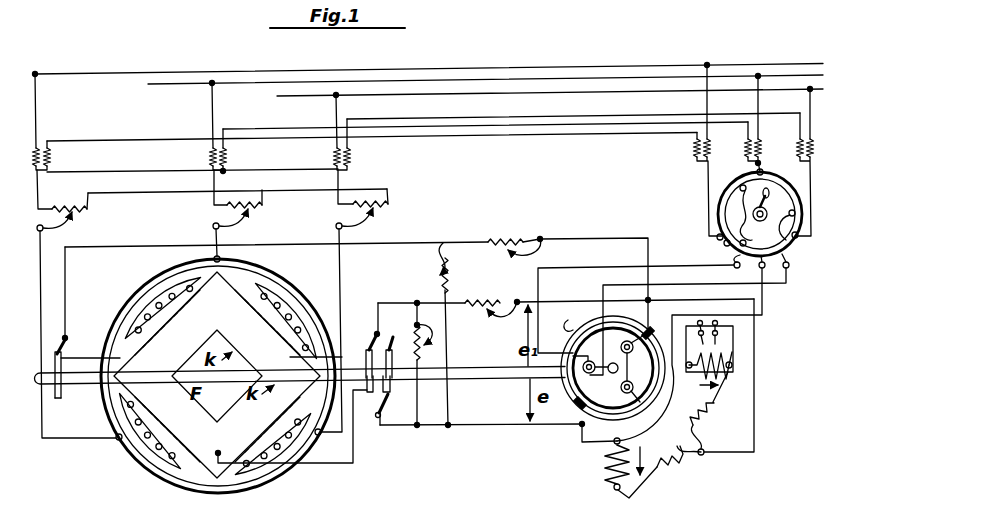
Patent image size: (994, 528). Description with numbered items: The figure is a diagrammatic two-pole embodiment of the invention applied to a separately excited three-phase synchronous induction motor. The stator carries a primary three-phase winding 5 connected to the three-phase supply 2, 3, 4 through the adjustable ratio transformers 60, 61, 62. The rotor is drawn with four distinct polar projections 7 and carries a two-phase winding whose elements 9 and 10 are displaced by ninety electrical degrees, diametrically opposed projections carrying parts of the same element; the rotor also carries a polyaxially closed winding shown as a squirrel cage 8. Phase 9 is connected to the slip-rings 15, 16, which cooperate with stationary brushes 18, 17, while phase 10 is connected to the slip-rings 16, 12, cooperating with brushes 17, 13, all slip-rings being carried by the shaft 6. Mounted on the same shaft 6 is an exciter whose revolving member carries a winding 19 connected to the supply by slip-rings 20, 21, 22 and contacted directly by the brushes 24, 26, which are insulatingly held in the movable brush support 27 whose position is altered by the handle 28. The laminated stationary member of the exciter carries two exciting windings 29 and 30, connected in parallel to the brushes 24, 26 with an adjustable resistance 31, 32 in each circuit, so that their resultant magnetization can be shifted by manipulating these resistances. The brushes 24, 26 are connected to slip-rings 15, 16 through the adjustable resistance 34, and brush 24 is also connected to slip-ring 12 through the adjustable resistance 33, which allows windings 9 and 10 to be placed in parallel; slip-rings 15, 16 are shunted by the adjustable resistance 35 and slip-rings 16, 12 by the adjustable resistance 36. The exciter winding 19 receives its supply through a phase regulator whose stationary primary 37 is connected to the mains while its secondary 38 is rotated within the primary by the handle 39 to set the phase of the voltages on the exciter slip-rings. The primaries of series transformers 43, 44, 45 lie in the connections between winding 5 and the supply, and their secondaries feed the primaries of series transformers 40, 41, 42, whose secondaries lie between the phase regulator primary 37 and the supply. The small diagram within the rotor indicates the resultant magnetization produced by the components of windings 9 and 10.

The three-phase supply 2 is at (126, 78).
The three-phase supply 3 is at (174, 85).
The three-phase supply 4 is at (285, 97).
The primary three-phase winding 5 is at (134, 293).
The shaft 6 is at (468, 379).
The polar projections 7 is at (181, 275).
The squirrel cage 8 is at (293, 296).
The rotor winding element 9 is at (238, 307).
The rotor winding element 10 is at (246, 434).
The slip-ring 12 is at (62, 400).
The stationary brush 13 is at (66, 341).
The slip-ring 15 is at (371, 397).
The slip-ring 16 is at (391, 345).
The stationary brush 17 is at (387, 406).
The stationary brush 18 is at (371, 336).
The exciter winding 19 is at (578, 384).
The slip-ring 20 is at (622, 340).
The slip-ring 21 is at (590, 374).
The slip-ring 22 is at (637, 377).
The brush 24 is at (653, 333).
The brush 26 is at (579, 408).
The movable brush support 27 is at (602, 427).
The handle 28 is at (570, 318).
The exciting winding 29 is at (612, 471).
The exciting winding 30 is at (732, 372).
The adjustable resistance 31 is at (672, 455).
The adjustable resistance 32 is at (722, 377).
The adjustable resistance 33 is at (569, 274).
The adjustable resistance 34 is at (566, 298).
The adjustable resistance 35 is at (428, 348).
The adjustable resistance 36 is at (427, 334).
The phase regulator primary 37 is at (716, 222).
The phase regulator secondary 38 is at (780, 242).
The handle 39 is at (756, 197).
The series transformer 40 is at (691, 185).
The series transformer 41 is at (737, 147).
The series transformer 42 is at (788, 174).
The series transformer 43 is at (57, 155).
The series transformer 44 is at (233, 149).
The series transformer 45 is at (357, 144).
The adjustable ratio transformer 60 is at (71, 202).
The adjustable ratio transformer 61 is at (246, 201).
The adjustable ratio transformer 62 is at (369, 201).